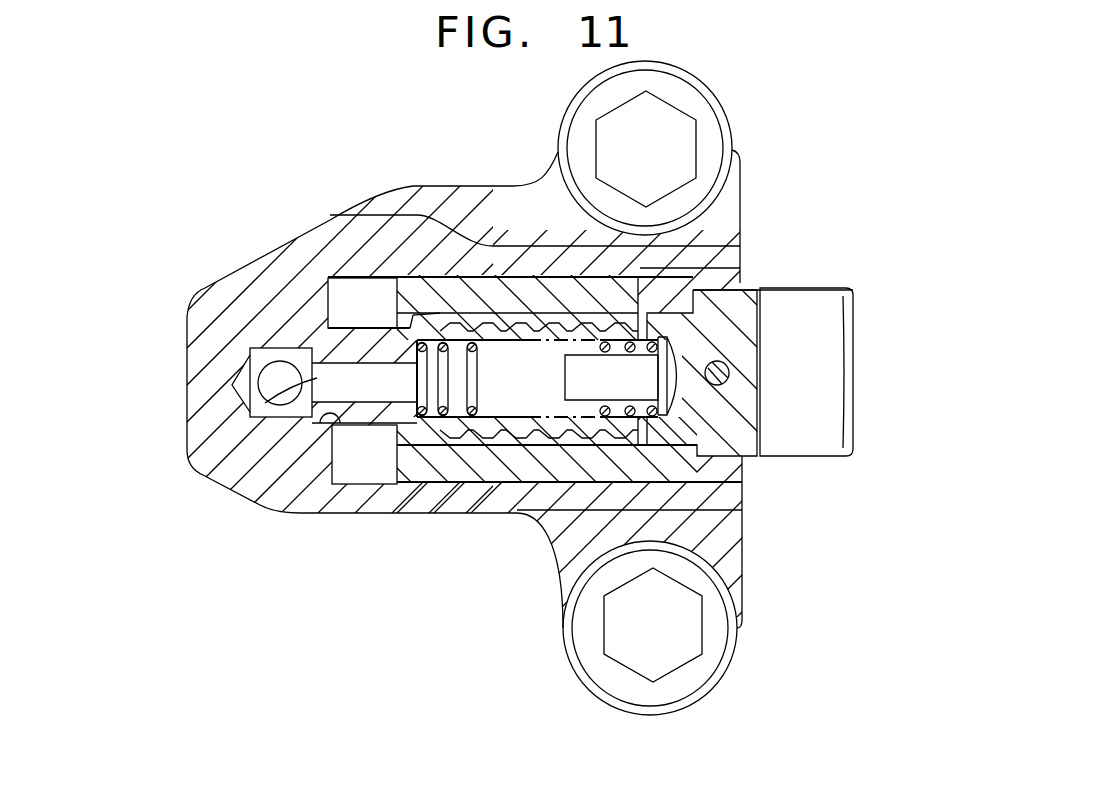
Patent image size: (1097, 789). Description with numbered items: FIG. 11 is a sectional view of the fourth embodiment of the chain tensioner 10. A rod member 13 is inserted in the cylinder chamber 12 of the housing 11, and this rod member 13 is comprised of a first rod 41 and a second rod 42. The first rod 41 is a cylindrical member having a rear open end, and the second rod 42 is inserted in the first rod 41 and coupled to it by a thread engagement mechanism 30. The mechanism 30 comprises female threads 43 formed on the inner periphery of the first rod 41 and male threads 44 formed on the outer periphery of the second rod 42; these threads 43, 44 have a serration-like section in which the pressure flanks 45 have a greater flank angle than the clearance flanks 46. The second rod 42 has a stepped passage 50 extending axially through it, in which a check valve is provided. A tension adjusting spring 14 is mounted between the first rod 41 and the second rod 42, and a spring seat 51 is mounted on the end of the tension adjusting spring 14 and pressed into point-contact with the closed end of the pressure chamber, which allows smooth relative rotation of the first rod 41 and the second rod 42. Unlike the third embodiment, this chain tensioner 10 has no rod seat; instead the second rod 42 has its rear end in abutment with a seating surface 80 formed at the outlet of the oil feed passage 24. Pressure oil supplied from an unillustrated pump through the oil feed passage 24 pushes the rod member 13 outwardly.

The chain tensioner 10 is at (170, 365).
The housing 11 is at (260, 263).
The cylinder chamber 12 is at (723, 283).
The rod member 13 is at (792, 279).
The tension adjusting spring 14 is at (415, 378).
The oil feed passage 24 is at (250, 355).
The thread engagement mechanism 30 is at (428, 300).
The first rod 41 is at (835, 320).
The second rod 42 is at (368, 333).
The female threads 43 is at (435, 310).
The male threads 44 is at (458, 305).
The pressure flanks 45 is at (447, 435).
The clearance flanks 46 is at (458, 435).
The stepped passage 50 is at (248, 418).
The spring seat 51 is at (747, 456).
The seating surface 80 is at (333, 465).